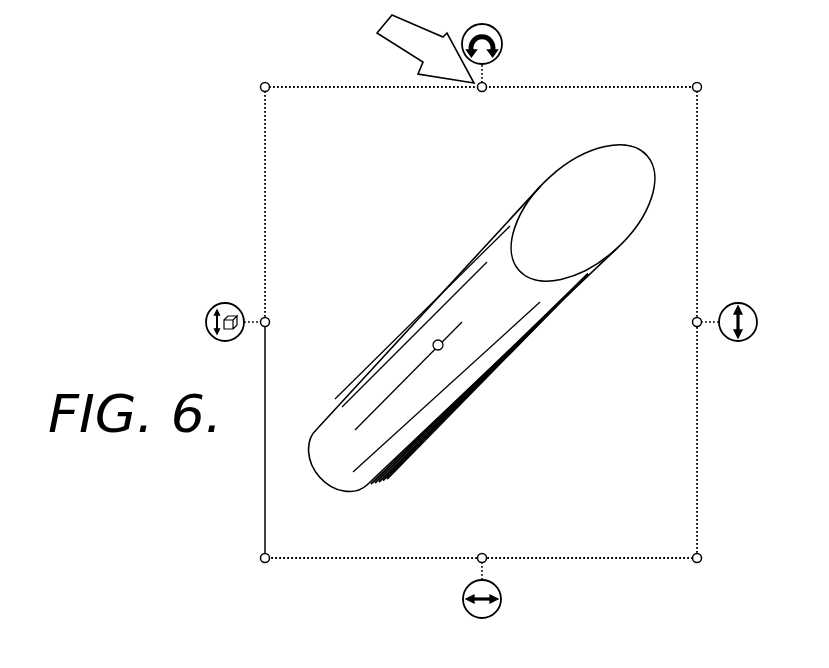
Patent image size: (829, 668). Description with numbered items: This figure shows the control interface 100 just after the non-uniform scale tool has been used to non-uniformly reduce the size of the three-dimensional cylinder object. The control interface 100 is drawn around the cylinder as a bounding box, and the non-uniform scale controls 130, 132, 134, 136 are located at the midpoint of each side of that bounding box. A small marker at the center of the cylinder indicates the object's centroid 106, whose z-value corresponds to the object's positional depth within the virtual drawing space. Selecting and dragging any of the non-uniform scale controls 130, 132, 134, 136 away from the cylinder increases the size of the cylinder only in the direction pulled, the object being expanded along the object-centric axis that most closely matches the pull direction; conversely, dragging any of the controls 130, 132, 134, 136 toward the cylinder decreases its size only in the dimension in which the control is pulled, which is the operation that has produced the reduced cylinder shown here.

The control interface 100 is at (745, 88).
The centroid 106 is at (442, 340).
The non-uniform scale control 130 is at (487, 85).
The non-uniform scale control 132 is at (699, 327).
The non-uniform scale control 134 is at (486, 561).
The non-uniform scale control 136 is at (262, 320).